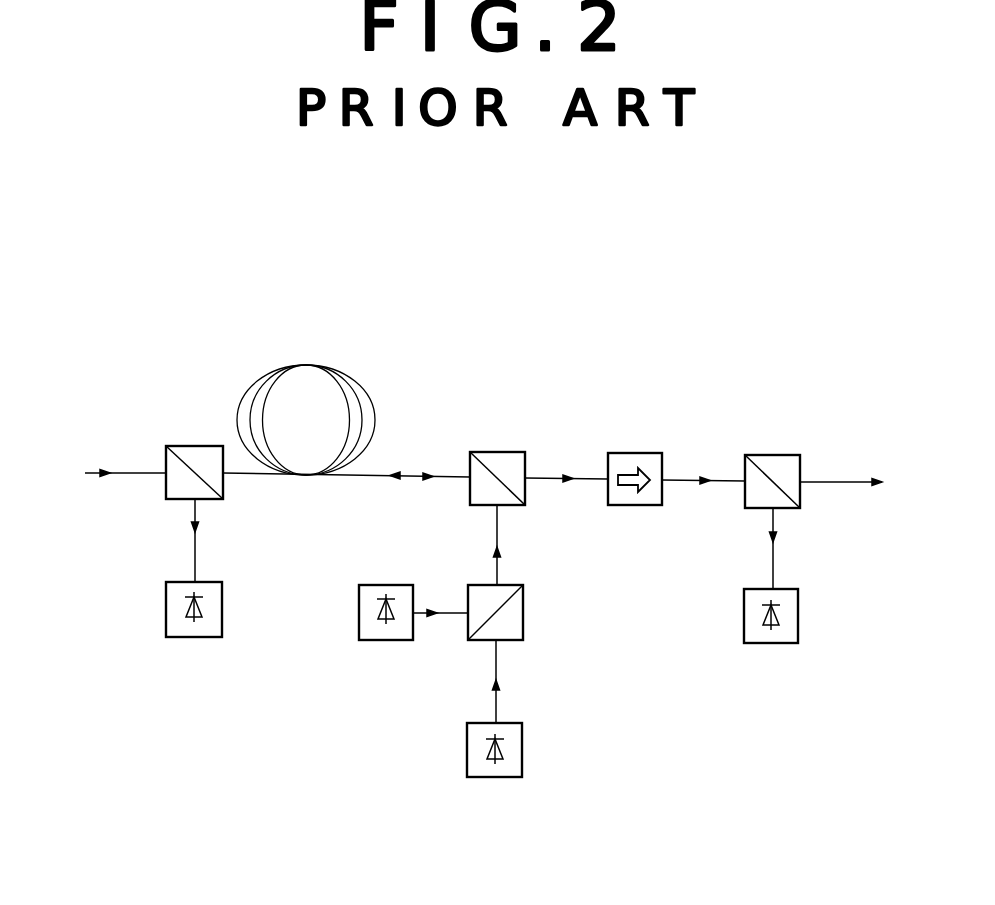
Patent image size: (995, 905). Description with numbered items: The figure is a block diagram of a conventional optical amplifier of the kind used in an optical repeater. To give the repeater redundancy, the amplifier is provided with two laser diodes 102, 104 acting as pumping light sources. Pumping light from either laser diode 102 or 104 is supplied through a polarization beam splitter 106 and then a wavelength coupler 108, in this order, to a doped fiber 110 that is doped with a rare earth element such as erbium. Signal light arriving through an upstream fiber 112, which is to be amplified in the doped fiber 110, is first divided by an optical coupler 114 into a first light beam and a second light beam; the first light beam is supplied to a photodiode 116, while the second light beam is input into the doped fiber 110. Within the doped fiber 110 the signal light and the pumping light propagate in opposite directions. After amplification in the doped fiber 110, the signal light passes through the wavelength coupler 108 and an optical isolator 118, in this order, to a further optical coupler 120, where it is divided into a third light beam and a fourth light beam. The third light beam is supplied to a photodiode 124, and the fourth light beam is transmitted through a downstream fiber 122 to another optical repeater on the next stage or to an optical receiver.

The laser diode 102 is at (359, 610).
The laser diode 104 is at (496, 777).
The polarization beam splitter 106 is at (525, 612).
The wavelength coupler 108 is at (500, 452).
The doped fiber 110 is at (367, 380).
The upstream fiber 112 is at (127, 471).
The optical coupler 114 is at (195, 446).
The photodiode 116 is at (166, 608).
The optical isolator 118 is at (637, 453).
The optical coupler 120 is at (777, 455).
The downstream fiber 122 is at (840, 480).
The photodiode 124 is at (798, 614).